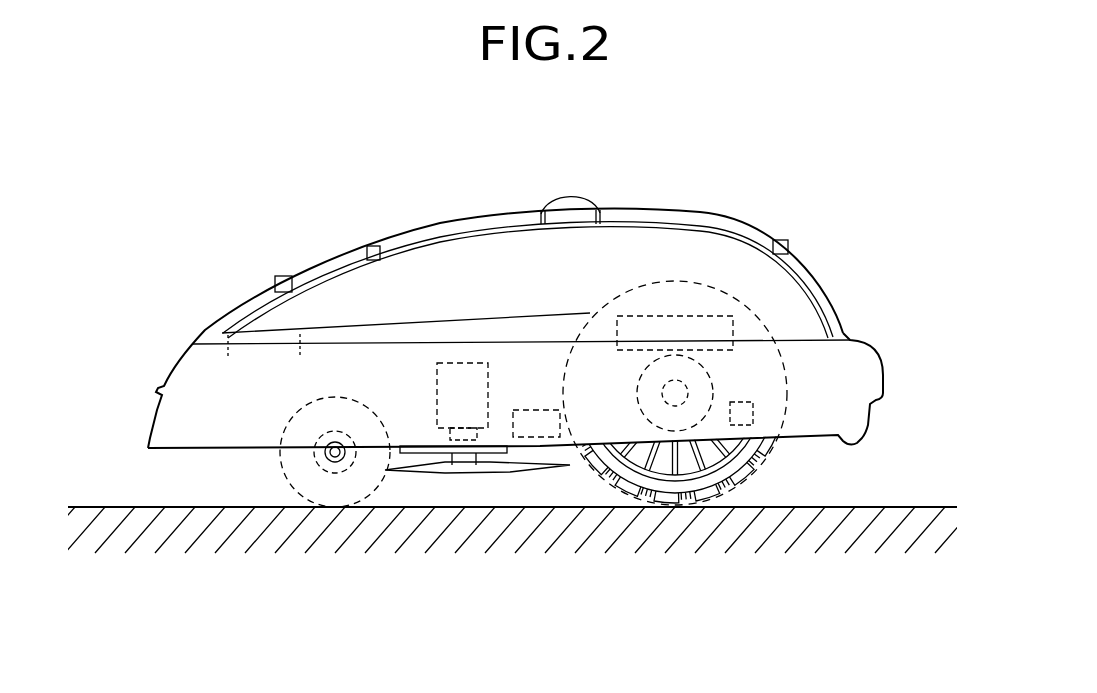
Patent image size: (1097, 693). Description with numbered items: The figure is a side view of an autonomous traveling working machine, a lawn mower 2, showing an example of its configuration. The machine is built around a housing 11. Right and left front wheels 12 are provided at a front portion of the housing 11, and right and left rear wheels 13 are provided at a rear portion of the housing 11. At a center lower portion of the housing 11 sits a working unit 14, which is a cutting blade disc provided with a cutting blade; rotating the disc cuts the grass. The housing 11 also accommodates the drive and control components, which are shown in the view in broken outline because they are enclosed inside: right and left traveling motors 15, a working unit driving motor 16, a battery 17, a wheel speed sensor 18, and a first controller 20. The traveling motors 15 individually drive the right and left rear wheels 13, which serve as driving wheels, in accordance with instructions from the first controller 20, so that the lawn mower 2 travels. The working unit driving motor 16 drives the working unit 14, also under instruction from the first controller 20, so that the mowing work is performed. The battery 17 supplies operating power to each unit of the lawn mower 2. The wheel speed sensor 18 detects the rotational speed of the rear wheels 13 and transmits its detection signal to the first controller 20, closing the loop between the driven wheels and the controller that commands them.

The lawn mower 2 is at (215, 203).
The housing 11 is at (334, 291).
The front wheels 12 is at (358, 487).
The rear wheels 13 is at (712, 482).
The working unit 14 is at (526, 478).
The traveling motors 15 is at (715, 382).
The working unit driving motor 16 is at (437, 388).
The battery 17 is at (525, 410).
The wheel speed sensor 18 is at (753, 414).
The first controller 20 is at (752, 328).